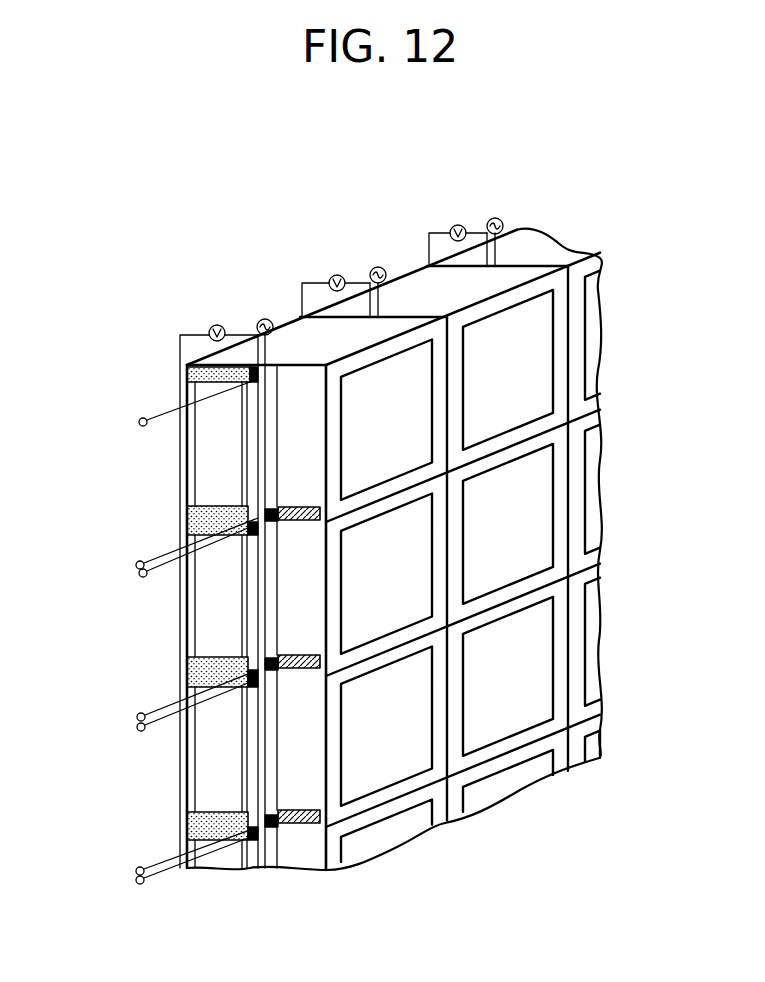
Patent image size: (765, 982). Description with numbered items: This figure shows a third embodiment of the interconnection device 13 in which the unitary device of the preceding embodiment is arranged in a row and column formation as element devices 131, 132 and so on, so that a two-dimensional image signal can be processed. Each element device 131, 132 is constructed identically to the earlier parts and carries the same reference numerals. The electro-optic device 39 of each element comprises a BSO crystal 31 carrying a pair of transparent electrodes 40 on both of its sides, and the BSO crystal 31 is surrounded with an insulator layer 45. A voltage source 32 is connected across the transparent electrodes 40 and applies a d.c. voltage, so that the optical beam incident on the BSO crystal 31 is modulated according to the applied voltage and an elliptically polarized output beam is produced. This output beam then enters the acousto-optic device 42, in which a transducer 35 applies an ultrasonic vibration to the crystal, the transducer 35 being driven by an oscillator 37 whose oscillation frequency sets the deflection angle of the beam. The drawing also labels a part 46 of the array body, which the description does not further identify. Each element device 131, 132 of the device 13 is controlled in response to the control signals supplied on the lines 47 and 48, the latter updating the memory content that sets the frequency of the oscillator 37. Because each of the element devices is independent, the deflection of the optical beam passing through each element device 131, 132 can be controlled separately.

The interconnection device 13 is at (578, 169).
The element device 131 is at (388, 420).
The element device 132 is at (508, 370).
The BSO crystal 31 is at (207, 419).
The voltage source 32 is at (216, 325).
The transducer 35 is at (313, 513).
The oscillator 37 is at (263, 319).
The electro-optic device 39 is at (212, 486).
The transparent electrodes 40 is at (243, 441).
The acousto-optic device 42 is at (413, 402).
The insulator layer 45 is at (200, 655).
The transparent plate 46 is at (490, 683).
The line 47 is at (167, 412).
The line 48 is at (169, 556).